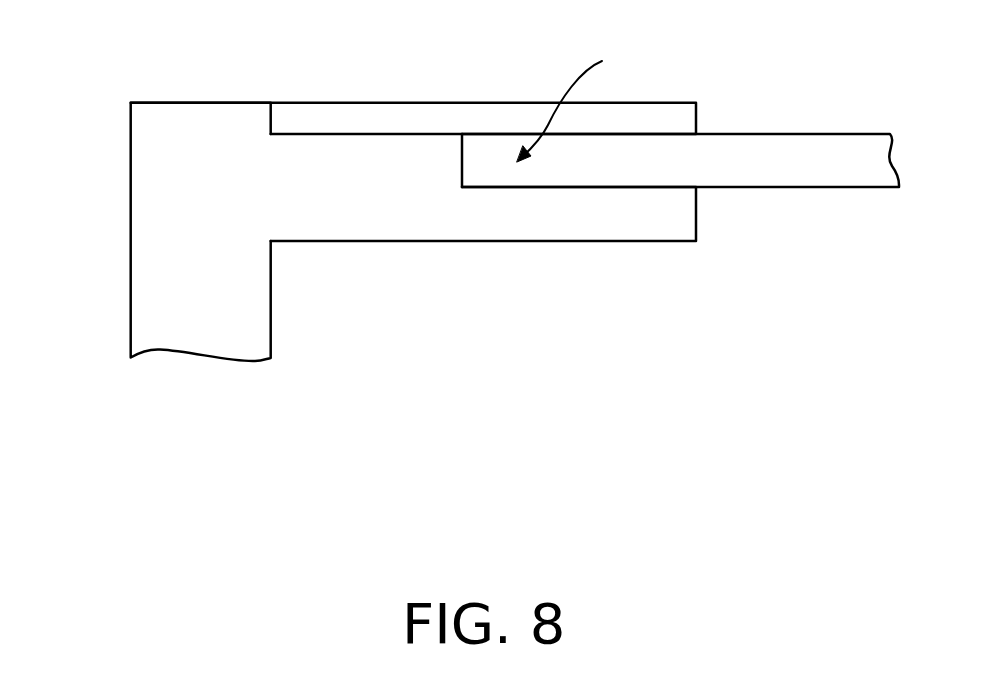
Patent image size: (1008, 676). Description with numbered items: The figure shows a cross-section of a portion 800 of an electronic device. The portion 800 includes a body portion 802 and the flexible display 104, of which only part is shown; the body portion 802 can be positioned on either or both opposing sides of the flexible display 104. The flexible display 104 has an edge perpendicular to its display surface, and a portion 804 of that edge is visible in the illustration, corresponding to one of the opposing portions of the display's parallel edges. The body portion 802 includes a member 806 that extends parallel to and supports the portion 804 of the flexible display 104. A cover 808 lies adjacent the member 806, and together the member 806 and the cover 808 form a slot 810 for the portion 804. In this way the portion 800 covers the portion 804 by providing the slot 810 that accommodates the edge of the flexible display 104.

The flexible display 104 is at (788, 134).
The portion of an electronic device 800 is at (788, 390).
The body portion 802 is at (163, 235).
The portion of the edge 804 is at (460, 164).
The member 806 is at (510, 241).
The cover 808 is at (423, 102).
The slot 810 is at (580, 100).